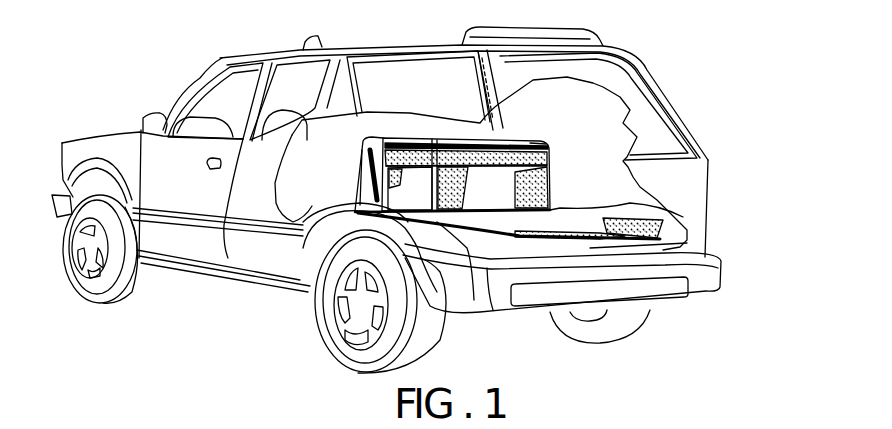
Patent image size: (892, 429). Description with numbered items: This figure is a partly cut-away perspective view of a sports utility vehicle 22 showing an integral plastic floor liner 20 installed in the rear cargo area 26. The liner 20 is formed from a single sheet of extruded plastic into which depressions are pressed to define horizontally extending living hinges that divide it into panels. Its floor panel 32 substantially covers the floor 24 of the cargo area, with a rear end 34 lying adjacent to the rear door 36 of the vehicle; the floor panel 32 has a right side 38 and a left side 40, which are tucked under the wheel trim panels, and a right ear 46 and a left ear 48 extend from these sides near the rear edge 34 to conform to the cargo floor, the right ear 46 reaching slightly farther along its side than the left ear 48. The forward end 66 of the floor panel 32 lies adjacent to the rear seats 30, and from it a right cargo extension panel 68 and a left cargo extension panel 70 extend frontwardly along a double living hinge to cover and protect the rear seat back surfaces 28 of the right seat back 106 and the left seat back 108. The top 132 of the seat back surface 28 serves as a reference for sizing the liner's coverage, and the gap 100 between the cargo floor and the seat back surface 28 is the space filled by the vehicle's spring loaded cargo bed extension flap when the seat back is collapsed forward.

The floor liner 20 is at (592, 204).
The sports utility vehicle 22 is at (630, 53).
The floor 24 is at (425, 262).
The rear cargo area 26 is at (568, 192).
The rear seat back surfaces 28 is at (405, 137).
The rear seats 30 is at (353, 177).
The floor panel 32 is at (551, 232).
The rear end 34 is at (640, 245).
The rear door 36 is at (673, 110).
The right side 38 is at (582, 223).
The left side 40 is at (400, 243).
The right ear 46 is at (690, 212).
The left ear 48 is at (497, 271).
The forward end 66 is at (475, 211).
The right cargo extension panel 68 is at (509, 197).
The left cargo extension panel 70 is at (422, 199).
The gap 100 is at (327, 213).
The right seat back 106 is at (497, 144).
The left seat back 108 is at (412, 138).
The top of the seat back 132 is at (532, 140).